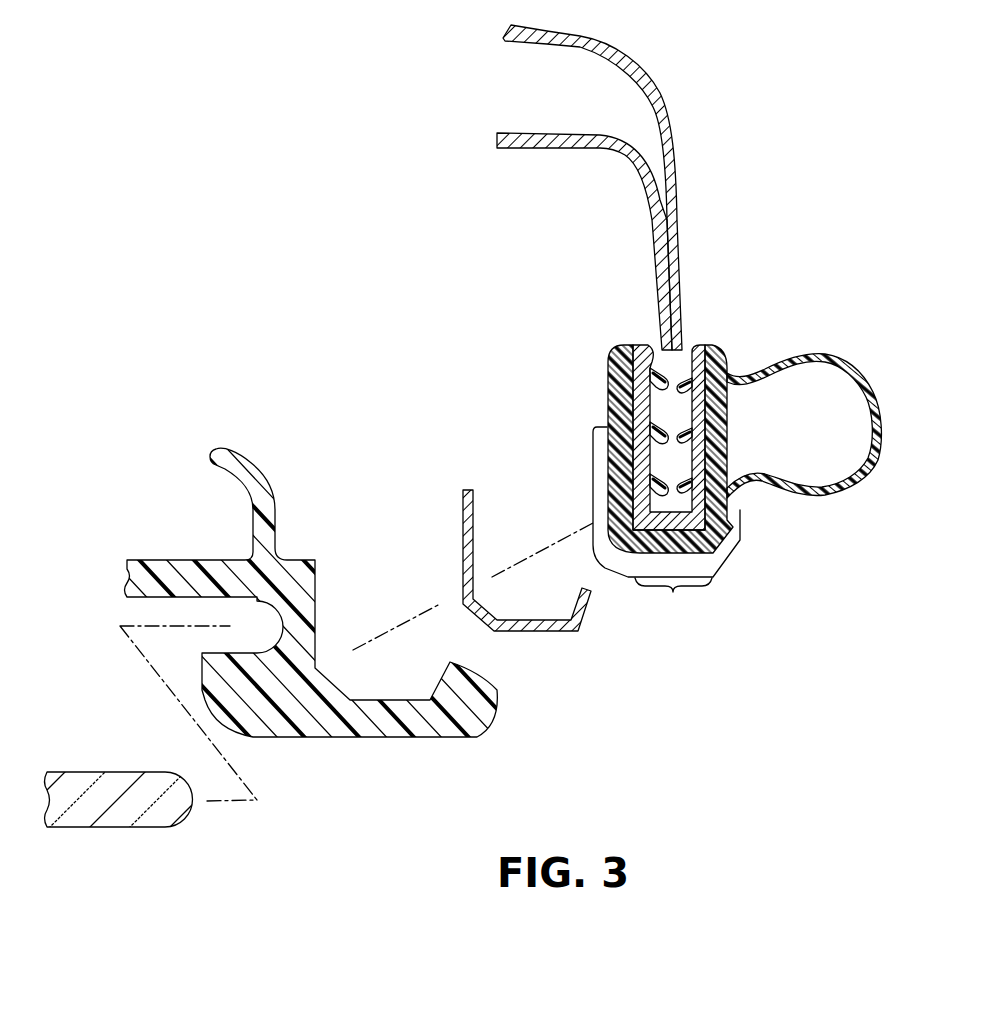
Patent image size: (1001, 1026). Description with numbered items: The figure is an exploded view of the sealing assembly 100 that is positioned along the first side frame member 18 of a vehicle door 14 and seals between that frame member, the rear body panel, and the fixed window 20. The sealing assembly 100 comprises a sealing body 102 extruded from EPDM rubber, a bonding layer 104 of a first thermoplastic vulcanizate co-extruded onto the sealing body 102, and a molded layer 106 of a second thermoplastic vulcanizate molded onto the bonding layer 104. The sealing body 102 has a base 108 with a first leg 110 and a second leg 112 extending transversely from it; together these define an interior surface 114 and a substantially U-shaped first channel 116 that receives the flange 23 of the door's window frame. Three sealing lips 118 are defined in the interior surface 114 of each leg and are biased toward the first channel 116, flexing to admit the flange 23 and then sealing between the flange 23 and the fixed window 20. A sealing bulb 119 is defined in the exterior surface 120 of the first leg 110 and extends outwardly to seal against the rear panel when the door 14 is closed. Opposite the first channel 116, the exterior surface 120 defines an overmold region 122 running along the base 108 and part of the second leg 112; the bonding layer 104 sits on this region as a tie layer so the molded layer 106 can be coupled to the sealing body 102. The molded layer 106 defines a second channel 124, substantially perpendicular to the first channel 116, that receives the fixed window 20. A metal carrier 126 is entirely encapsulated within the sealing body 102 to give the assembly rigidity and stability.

The vehicle door 14 is at (603, 35).
The first side frame member 18 is at (583, 50).
The flange 23 is at (660, 229).
The fixed window 20 is at (157, 828).
The sealing assembly 100 is at (296, 284).
The sealing body 102 is at (735, 500).
The bonding layer 104 is at (543, 631).
The molded layer 106 is at (473, 718).
The base 108 is at (656, 552).
The first leg 110 is at (726, 423).
The second leg 112 is at (620, 463).
The interior surface 114 is at (609, 376).
The first channel 116 is at (686, 498).
The sealing lip 118 is at (665, 427).
The sealing bulb 119 is at (815, 352).
The exterior surface 120 is at (608, 403).
The overmold region 122 is at (673, 594).
The second channel 124 is at (244, 620).
The carrier 126 is at (706, 366).